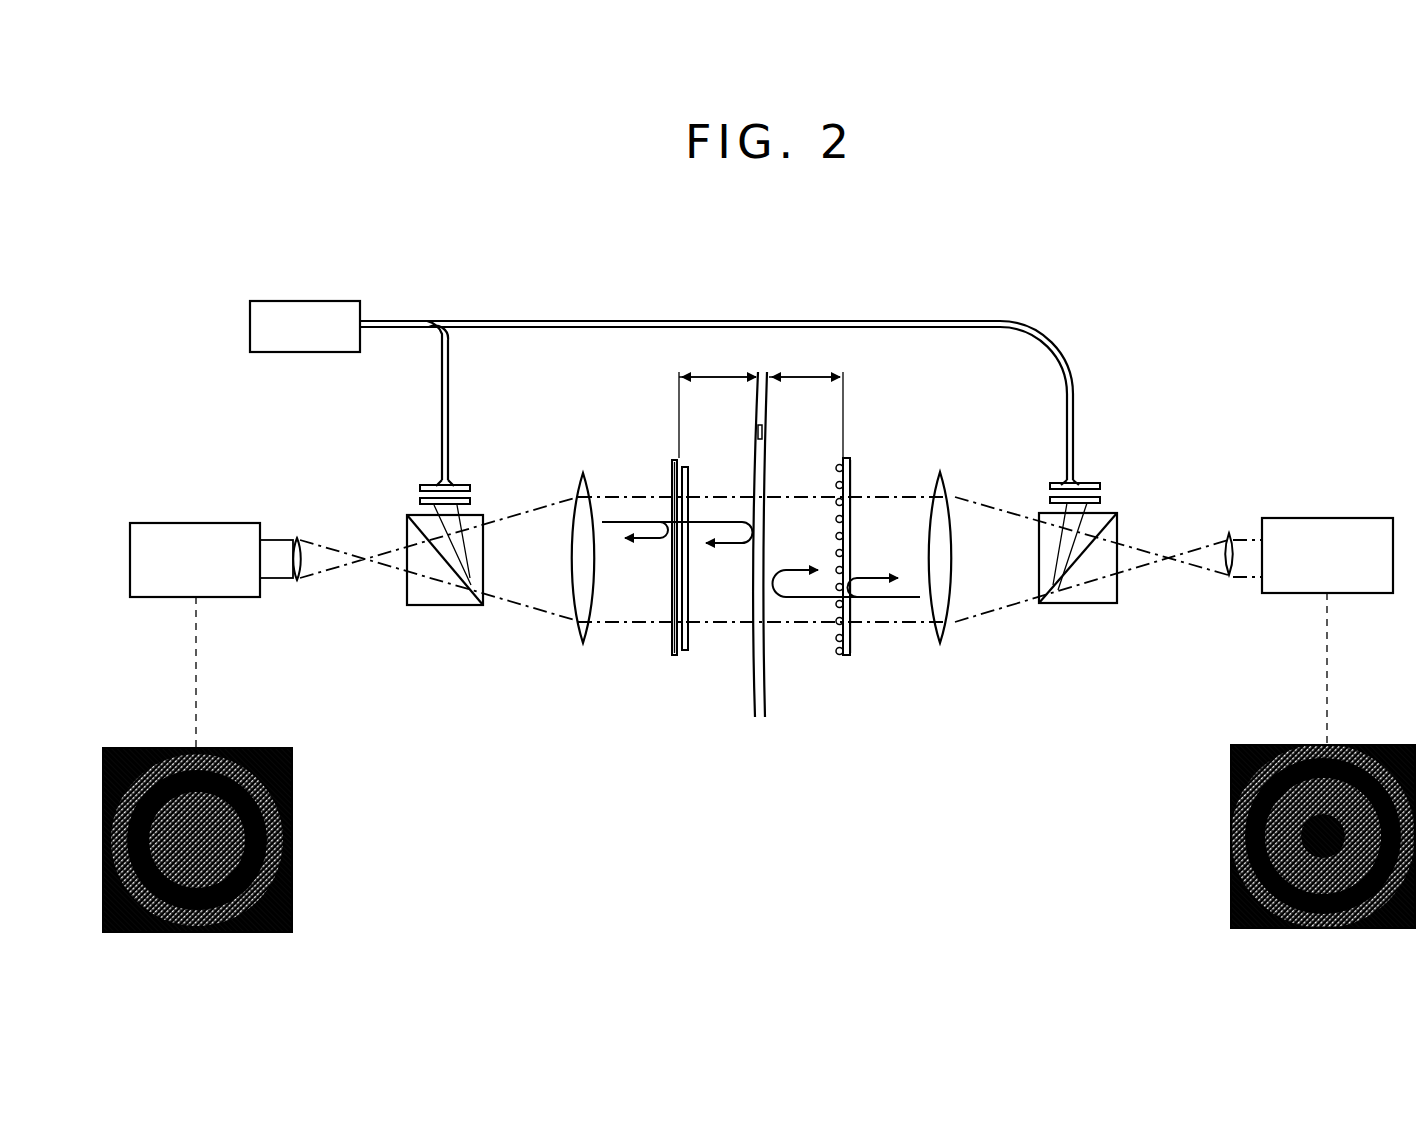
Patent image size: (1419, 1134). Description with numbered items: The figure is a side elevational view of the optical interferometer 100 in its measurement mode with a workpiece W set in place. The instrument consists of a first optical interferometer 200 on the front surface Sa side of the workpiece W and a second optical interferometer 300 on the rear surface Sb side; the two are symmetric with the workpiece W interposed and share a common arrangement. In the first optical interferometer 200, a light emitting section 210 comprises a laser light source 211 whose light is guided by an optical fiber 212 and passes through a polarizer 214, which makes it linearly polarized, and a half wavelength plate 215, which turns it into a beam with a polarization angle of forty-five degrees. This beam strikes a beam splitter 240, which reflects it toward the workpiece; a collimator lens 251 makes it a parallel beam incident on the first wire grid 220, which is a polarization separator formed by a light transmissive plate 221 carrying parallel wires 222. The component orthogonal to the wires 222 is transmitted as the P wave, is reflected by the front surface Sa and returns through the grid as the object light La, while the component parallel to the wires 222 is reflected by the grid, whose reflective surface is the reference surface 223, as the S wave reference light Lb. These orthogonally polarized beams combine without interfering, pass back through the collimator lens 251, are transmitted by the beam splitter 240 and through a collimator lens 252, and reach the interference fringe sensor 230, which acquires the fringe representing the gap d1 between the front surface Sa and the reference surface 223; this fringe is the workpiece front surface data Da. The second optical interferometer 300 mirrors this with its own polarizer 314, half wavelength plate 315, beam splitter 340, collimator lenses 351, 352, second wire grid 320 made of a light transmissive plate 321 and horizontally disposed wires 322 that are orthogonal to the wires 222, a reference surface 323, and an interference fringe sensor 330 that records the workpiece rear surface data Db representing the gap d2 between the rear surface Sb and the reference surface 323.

The optical interferometer 100 is at (1066, 270).
The first optical interferometer 200 is at (510, 692).
The second optical interferometer 300 is at (1103, 732).
The light emitting section 210 is at (439, 280).
The light source 211 is at (305, 300).
The optical fiber 212 is at (450, 383).
The polarizer 214 is at (425, 485).
The half wavelength plate 215 is at (422, 500).
The first wire grid 220 is at (673, 462).
The light transmissive plate 221 is at (676, 656).
The wires 222 is at (688, 652).
The reference surface 223 is at (672, 633).
The interference fringe sensor 230 is at (191, 523).
The beam splitter 240 is at (450, 605).
The collimator lens 251 is at (583, 473).
The collimator lens 252 is at (296, 582).
The polarizer 314 is at (1078, 484).
The half wavelength plate 315 is at (1102, 498).
The second wire grid 320 is at (848, 460).
The light transmissive plate 321 is at (847, 658).
The wires 322 is at (837, 647).
The reference surface 323 is at (850, 635).
The interference fringe sensor 330 is at (1342, 518).
The beam splitter 340 is at (1090, 604).
The collimator lens 351 is at (940, 645).
The collimator lens 352 is at (1229, 578).
The workpiece W is at (763, 432).
The front surface Sa is at (755, 718).
The rear surface Sb is at (767, 718).
The object light La is at (720, 545).
The reference light Lb is at (639, 540).
The gap d1 is at (761, 403).
The gap d2 is at (804, 365).
The workpiece front surface data Da is at (317, 876).
The workpiece rear surface data Db is at (1210, 872).